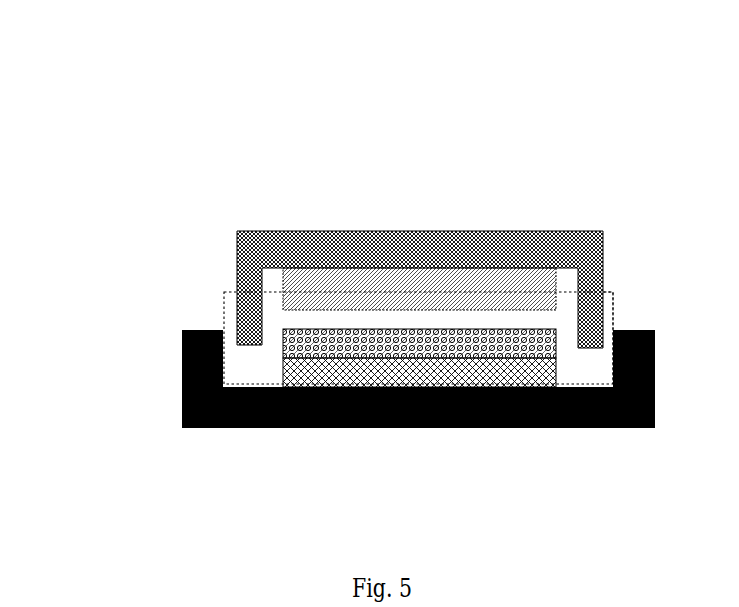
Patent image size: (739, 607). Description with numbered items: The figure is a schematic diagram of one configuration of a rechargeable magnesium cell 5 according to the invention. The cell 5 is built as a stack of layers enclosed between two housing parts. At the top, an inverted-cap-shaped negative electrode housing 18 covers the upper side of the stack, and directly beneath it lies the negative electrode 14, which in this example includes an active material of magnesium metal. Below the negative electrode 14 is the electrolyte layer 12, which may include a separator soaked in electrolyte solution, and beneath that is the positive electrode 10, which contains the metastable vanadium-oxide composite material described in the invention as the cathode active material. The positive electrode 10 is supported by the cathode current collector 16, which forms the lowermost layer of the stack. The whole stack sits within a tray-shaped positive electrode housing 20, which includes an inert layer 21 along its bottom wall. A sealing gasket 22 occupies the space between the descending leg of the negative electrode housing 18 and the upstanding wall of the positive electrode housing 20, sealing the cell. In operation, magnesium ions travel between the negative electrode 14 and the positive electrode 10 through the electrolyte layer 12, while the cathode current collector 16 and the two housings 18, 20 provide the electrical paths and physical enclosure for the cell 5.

The rechargeable magnesium cell 5 is at (487, 125).
The positive electrode 10 is at (558, 348).
The electrolyte layer 12 is at (290, 316).
The negative electrode 14 is at (530, 297).
The cathode current collector 16 is at (278, 380).
The negative electrode housing 18 is at (407, 233).
The positive electrode housing 20 is at (207, 368).
The inert layer 21 is at (187, 427).
The sealing gasket 22 is at (590, 360).